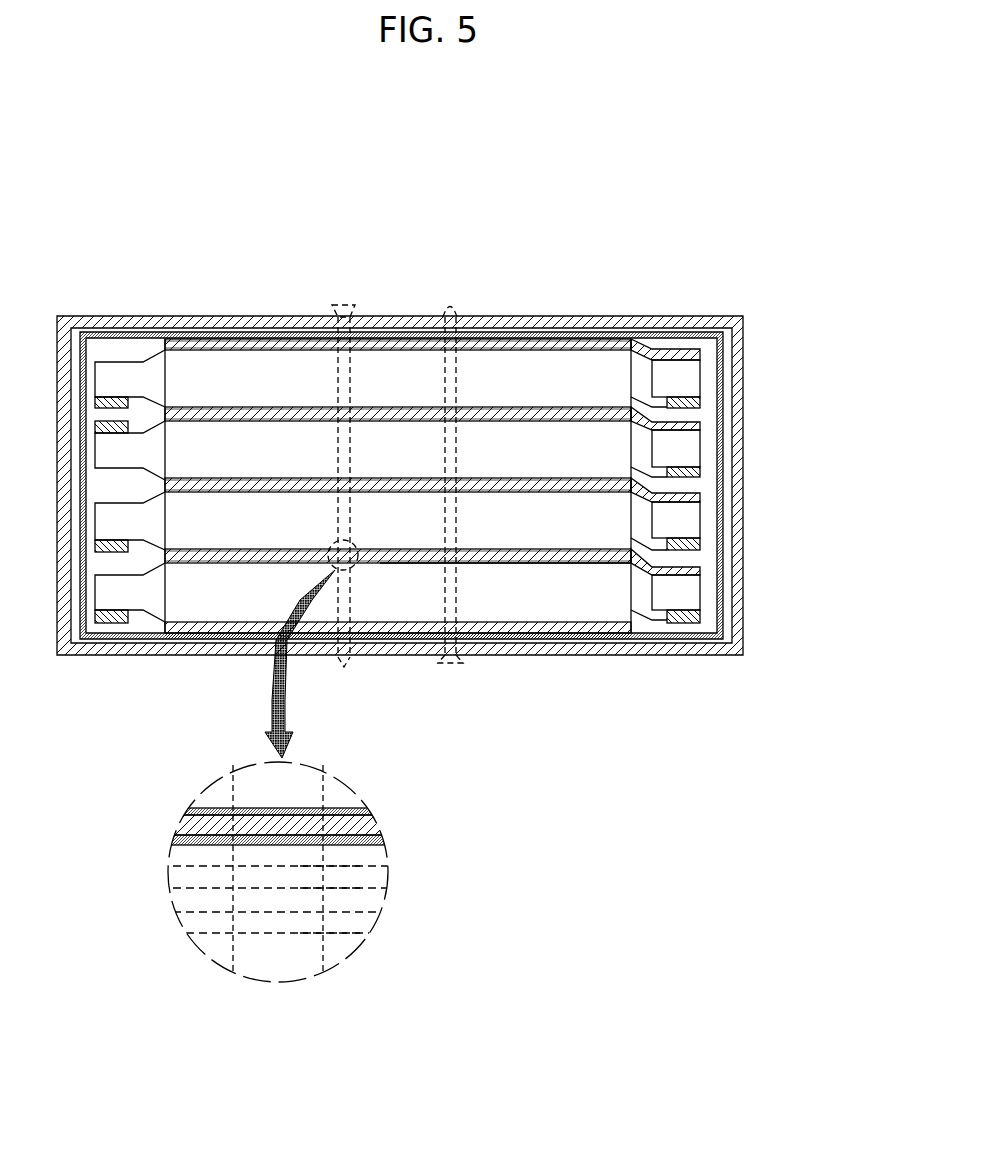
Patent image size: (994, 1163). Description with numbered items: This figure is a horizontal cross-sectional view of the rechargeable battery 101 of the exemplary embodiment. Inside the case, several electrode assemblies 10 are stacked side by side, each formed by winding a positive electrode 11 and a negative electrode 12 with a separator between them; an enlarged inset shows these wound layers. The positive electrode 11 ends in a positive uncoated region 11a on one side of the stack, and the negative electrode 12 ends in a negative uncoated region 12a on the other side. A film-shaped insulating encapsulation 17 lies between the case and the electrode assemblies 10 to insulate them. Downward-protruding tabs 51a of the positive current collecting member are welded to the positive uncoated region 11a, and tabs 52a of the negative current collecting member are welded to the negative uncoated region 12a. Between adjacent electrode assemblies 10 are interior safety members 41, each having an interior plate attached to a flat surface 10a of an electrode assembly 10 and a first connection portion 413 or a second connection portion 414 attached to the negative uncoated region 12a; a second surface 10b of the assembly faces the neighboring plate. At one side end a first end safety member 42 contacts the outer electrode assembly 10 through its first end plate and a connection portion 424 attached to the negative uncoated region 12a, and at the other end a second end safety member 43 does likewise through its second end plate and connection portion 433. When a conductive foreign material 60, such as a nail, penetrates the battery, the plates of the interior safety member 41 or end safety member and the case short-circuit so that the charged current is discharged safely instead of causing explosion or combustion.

The rechargeable battery 101 is at (425, 181).
The electrode assembly 10 is at (446, 551).
The flat surface 10a is at (363, 630).
The second surface of battery cell 10b is at (413, 564).
The positive electrode 11 is at (363, 923).
The negative electrode 12 is at (381, 877).
The positive uncoated region 11a is at (117, 375).
The negative uncoated region 12a is at (672, 370).
The insulating encapsulation 17 is at (223, 333).
The interior safety member 41 is at (508, 415).
The first connection portion 413 is at (688, 567).
The second connection portion 414 is at (661, 542).
The first end safety member 42 is at (497, 641).
The connection portion 424 is at (658, 621).
The second end safety member 43 is at (285, 334).
The connection portion 433 is at (690, 352).
The tab 51a is at (122, 548).
The tab 52a is at (685, 624).
The conductive foreign material 60 is at (342, 303).